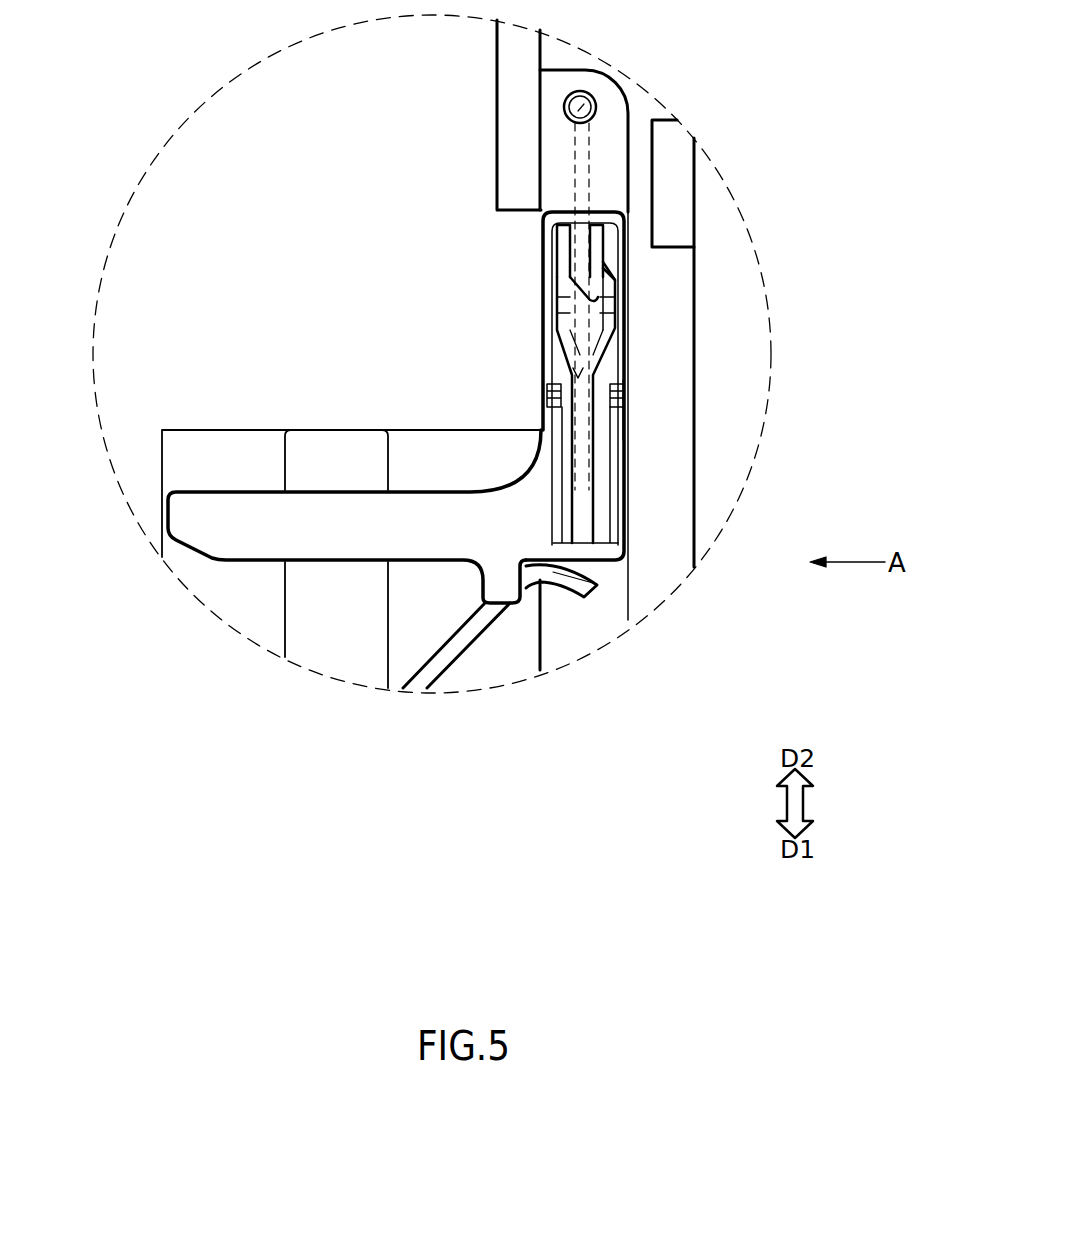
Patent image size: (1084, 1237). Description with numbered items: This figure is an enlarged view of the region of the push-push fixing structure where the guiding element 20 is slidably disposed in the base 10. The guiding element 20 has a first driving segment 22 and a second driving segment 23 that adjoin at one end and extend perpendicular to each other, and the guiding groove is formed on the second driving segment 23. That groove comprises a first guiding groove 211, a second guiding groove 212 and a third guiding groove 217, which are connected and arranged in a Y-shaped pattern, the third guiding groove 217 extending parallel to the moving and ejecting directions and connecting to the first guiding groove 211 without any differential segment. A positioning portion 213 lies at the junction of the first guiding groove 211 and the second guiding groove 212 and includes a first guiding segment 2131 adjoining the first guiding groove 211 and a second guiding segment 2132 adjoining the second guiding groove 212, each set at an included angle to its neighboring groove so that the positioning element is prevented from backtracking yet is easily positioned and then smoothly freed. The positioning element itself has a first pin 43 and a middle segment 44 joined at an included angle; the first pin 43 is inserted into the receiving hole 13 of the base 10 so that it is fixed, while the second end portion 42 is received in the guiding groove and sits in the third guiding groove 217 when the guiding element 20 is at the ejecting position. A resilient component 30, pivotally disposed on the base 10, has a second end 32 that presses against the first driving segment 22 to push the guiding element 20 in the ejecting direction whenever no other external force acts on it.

The base 10 is at (604, 175).
The receiving hole 13 is at (596, 108).
The first pin 43 is at (600, 85).
The middle segment 44 is at (622, 430).
The second end portion 42 is at (586, 483).
The guiding element 20 is at (617, 358).
The second driving segment 23 is at (605, 520).
The third guiding groove 217 is at (622, 400).
The first guiding groove 211 is at (605, 300).
The second guiding groove 212 is at (562, 316).
The positioning portion 213 is at (612, 323).
The first guiding segment 2131 is at (617, 278).
The second guiding segment 2132 is at (573, 290).
The first driving segment 22 is at (315, 537).
The resilient component 30 is at (478, 622).
The second end 32 is at (557, 592).